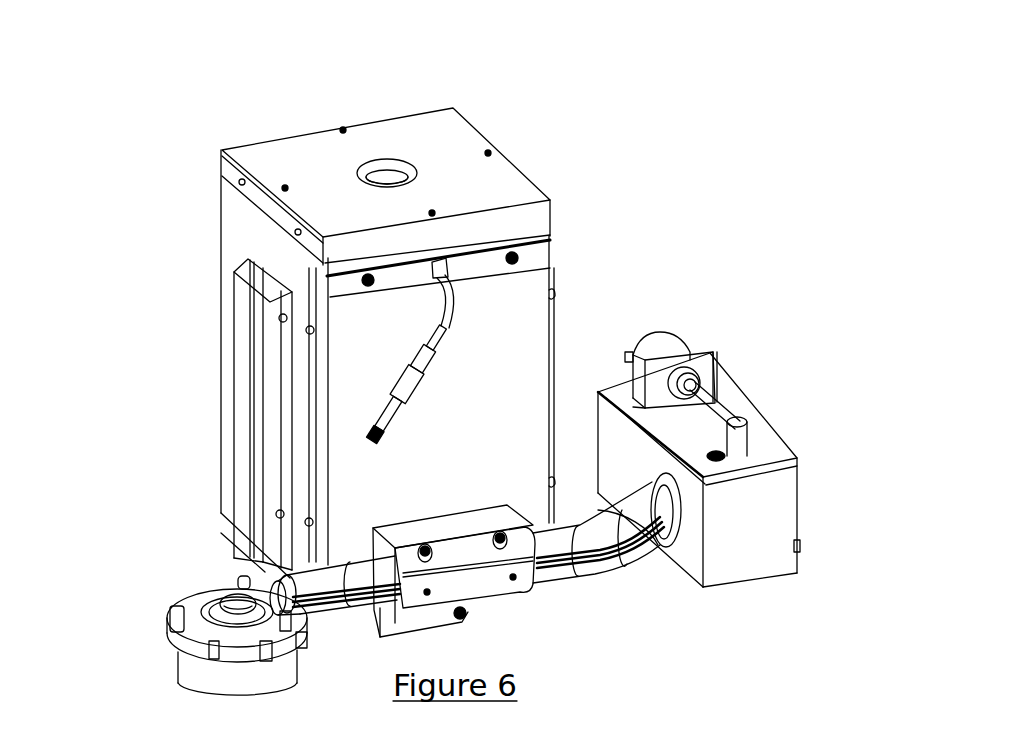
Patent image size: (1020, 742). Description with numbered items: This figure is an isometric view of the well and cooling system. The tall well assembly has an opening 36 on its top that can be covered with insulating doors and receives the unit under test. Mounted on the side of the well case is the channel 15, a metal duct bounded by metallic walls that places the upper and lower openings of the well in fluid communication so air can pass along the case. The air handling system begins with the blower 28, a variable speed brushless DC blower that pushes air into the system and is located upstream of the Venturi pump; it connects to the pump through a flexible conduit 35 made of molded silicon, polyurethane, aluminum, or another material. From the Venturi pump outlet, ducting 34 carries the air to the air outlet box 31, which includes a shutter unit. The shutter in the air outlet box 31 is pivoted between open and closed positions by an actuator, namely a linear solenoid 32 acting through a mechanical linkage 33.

The channel 15 is at (240, 358).
The blower 28 is at (200, 632).
The air outlet box 31 is at (760, 517).
The linear solenoid 32 is at (655, 353).
The mechanical linkage 33 is at (716, 390).
The ducting 34 is at (620, 572).
The flexible conduit 35 is at (318, 590).
The opening 36 is at (360, 167).